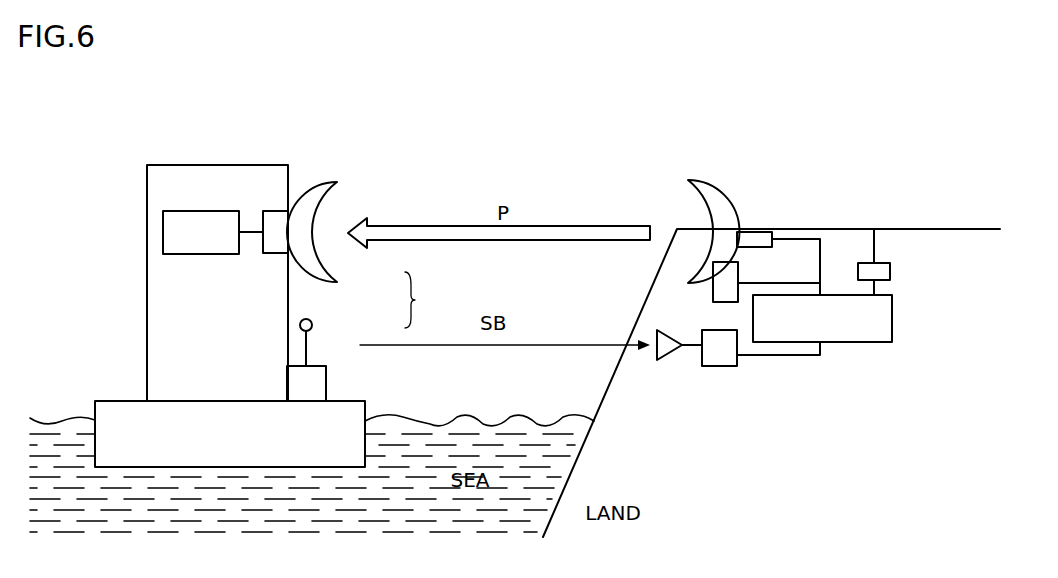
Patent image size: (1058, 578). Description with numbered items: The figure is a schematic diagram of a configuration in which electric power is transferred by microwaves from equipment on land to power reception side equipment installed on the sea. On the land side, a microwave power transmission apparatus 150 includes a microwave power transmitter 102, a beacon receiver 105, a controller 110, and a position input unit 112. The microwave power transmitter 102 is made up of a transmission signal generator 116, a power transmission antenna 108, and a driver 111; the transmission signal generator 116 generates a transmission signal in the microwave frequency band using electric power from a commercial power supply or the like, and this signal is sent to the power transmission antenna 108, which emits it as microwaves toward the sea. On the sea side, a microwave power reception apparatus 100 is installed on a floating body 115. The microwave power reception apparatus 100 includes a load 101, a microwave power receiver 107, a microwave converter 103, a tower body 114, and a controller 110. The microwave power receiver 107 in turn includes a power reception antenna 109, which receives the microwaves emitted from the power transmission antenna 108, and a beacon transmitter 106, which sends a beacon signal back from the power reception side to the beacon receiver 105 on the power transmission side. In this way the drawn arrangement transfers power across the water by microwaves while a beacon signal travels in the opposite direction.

The microwave power reception apparatus 100 is at (140, 157).
The load 101 is at (187, 210).
The microwave power transmitter 102 is at (830, 160).
The microwave converter 103 is at (282, 210).
The beacon receiver 105 is at (692, 363).
The beacon transmitter 106 is at (327, 380).
The microwave power receiver 107 is at (429, 300).
The power transmission antenna 108 is at (730, 178).
The power reception antenna 109 is at (337, 282).
The controller 110 is at (752, 323).
The driver 111 is at (738, 272).
The position input unit 112 is at (873, 263).
The tower body 114 is at (147, 343).
The floating body 115 is at (112, 400).
The transmission signal generator 116 is at (760, 232).
The microwave power transmission apparatus 150 is at (646, 160).